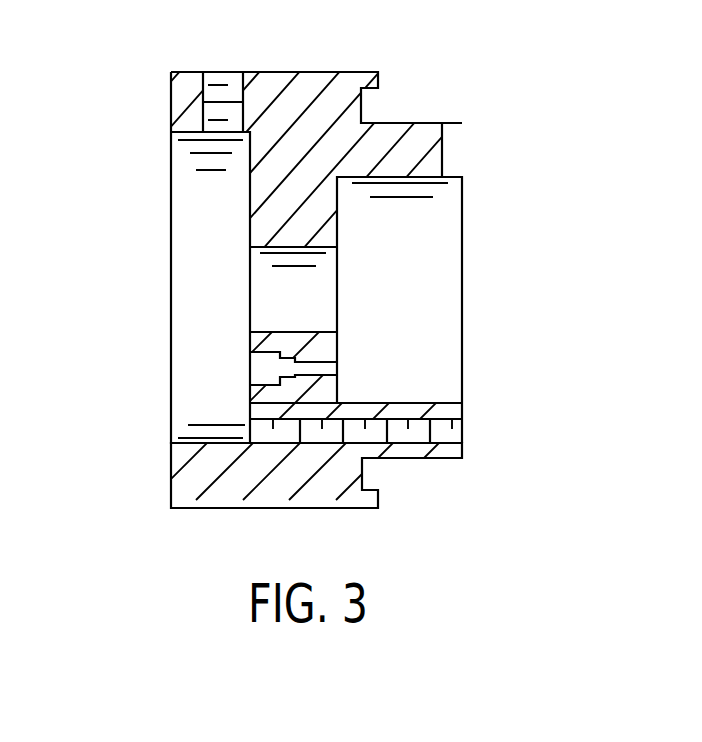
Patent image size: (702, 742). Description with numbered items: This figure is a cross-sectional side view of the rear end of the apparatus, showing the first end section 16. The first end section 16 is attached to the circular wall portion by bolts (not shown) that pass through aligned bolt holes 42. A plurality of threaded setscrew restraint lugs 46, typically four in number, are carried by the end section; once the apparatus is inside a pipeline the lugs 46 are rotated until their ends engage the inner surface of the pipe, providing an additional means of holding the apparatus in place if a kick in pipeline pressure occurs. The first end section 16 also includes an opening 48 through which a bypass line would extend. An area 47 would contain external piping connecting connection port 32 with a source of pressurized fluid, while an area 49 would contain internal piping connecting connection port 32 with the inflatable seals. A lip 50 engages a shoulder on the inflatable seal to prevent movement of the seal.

The first end section 16 is at (165, 471).
The connection port 32 is at (338, 365).
The bolt holes 42 is at (248, 428).
The threaded setscrew restraint lugs 46 is at (235, 72).
The area 47 is at (210, 238).
The opening 48 is at (338, 262).
The area 49 is at (420, 266).
The lip 50 is at (378, 80).